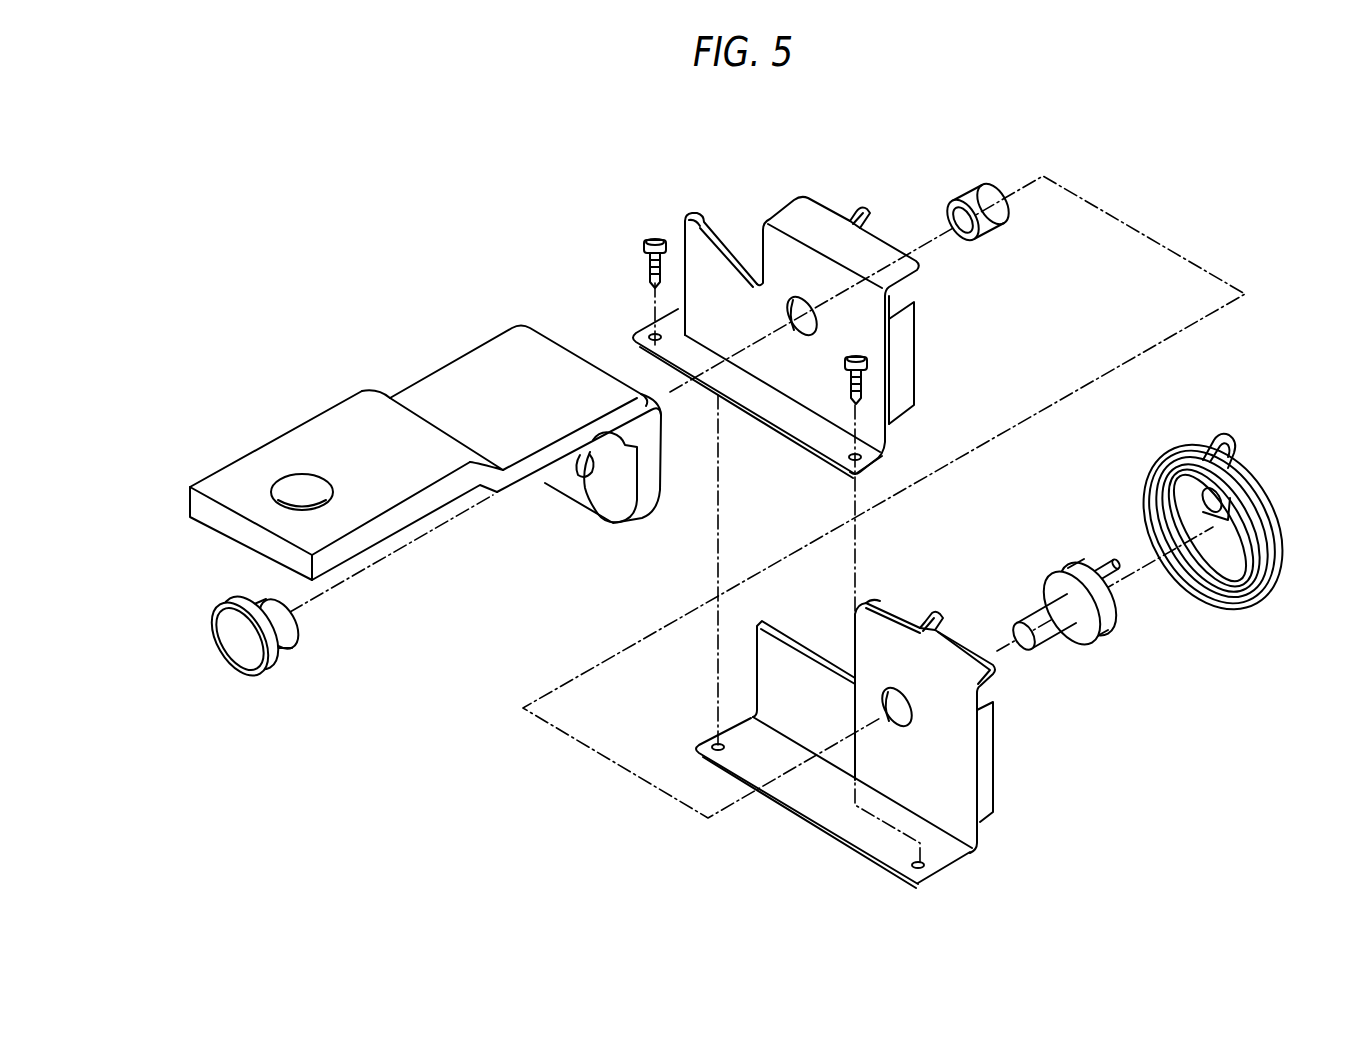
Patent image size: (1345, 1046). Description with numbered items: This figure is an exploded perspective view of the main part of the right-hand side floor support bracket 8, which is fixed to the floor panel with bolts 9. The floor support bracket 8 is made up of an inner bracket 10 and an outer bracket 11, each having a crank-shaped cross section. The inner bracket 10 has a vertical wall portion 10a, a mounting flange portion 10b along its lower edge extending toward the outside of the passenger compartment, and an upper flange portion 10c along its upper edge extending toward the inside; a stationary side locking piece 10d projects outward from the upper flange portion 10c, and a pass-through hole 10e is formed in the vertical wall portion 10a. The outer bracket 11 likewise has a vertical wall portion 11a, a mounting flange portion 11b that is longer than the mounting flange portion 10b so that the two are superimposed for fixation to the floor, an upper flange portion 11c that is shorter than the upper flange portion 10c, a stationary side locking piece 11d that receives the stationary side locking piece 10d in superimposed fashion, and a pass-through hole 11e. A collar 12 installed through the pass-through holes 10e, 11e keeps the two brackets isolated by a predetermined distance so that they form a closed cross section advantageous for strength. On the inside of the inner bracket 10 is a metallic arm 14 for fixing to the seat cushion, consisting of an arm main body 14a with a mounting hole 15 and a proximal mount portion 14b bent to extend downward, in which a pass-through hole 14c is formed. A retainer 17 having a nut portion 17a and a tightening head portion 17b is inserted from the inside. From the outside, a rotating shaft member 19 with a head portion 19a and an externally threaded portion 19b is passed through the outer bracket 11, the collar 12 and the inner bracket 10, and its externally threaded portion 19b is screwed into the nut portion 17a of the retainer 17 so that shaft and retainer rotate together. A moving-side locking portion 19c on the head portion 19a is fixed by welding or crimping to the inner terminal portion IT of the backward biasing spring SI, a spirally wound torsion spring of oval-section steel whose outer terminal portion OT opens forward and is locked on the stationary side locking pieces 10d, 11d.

The floor support bracket 8 is at (578, 212).
The bolts 9 is at (647, 268).
The inner bracket 10 is at (815, 315).
The vertical wall portion 10a is at (717, 282).
The mounting flange portion 10b is at (758, 398).
The upper flange portion 10c is at (797, 213).
The stationary side locking piece 10d is at (866, 204).
The pass-through hole 10e is at (798, 338).
The outer bracket 11 is at (883, 718).
The vertical wall portion 11a is at (958, 741).
The mounting flange portion 11b is at (835, 812).
The upper flange portion 11c is at (897, 619).
The stationary side locking piece 11d is at (935, 614).
The pass-through hole 11e is at (900, 722).
The collar 12 is at (1001, 230).
The arm 14 is at (425, 449).
The arm main body 14a is at (300, 447).
The proximal mount portion 14b is at (565, 487).
The pass-through hole 14c is at (590, 462).
The mounting hole 15 is at (292, 486).
The retainer 17 is at (266, 665).
The nut portion 17a is at (282, 640).
The tightening head portion 17b is at (240, 600).
The rotating shaft member 19 is at (1104, 595).
The head portion 19a is at (1058, 578).
The externally threaded portion 19b is at (1055, 630).
The moving-side locking portion 19c is at (1098, 560).
The outer terminal portion OT is at (1214, 433).
The backward biasing spring SI is at (1216, 495).
The inner terminal portion IT is at (1222, 495).